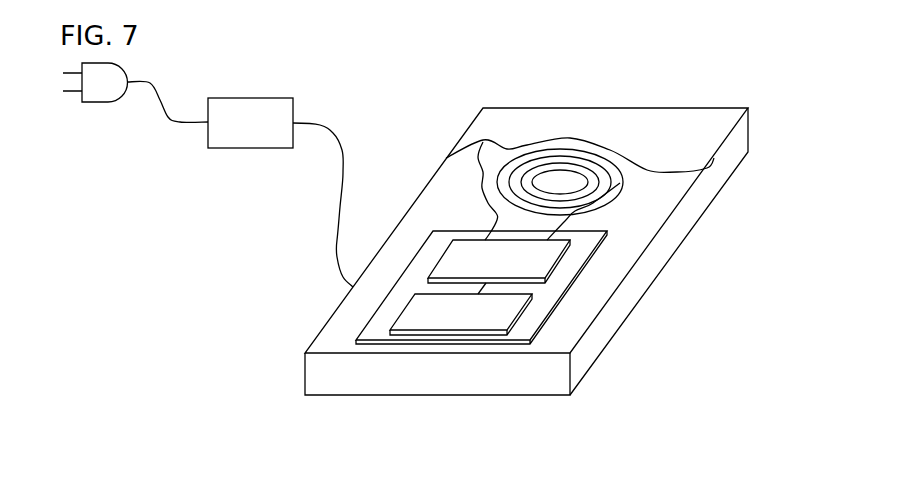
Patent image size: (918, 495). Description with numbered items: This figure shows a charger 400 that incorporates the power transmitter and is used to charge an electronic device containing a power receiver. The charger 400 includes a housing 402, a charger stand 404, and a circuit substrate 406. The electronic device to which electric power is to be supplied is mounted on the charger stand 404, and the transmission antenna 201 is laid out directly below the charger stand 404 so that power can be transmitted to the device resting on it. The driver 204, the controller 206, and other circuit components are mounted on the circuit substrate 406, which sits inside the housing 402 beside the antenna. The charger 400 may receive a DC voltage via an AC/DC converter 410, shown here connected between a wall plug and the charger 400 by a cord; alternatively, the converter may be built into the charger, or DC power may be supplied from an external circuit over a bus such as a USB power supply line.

The transmission antenna 201 is at (623, 183).
The driver 204 is at (540, 266).
The controller 206 is at (520, 308).
The charger 400 is at (455, 378).
The housing 402 is at (740, 138).
The charger stand 404 is at (515, 140).
The circuit substrate 406 is at (603, 239).
The AC/DC converter 410 is at (250, 148).